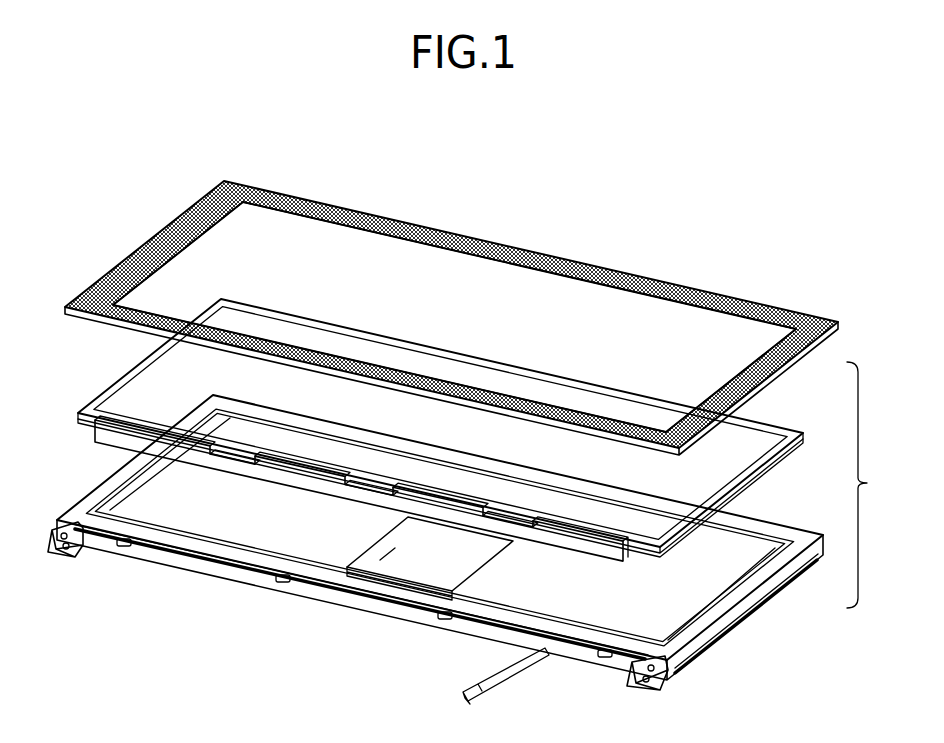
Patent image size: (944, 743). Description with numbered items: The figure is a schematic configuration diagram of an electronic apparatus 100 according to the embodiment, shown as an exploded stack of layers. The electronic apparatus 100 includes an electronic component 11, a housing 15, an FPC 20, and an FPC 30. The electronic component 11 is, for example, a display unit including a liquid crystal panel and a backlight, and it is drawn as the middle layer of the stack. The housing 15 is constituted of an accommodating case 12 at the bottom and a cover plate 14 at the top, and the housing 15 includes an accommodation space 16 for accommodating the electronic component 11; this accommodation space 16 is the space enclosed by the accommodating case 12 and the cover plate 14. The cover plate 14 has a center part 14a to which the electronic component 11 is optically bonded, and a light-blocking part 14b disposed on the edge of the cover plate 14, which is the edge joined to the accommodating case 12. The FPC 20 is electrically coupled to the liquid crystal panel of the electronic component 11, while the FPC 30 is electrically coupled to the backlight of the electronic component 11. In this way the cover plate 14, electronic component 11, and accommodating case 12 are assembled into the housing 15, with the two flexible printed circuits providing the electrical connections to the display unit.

The electronic apparatus 100 is at (626, 231).
The cover plate 14 is at (787, 377).
The center part 14a is at (383, 263).
The light-blocking part 14b is at (280, 192).
The electronic component 11 is at (110, 393).
The accommodating case 12 is at (780, 574).
The housing 15 is at (873, 485).
The accommodation space 16 is at (678, 624).
The FPC 20 is at (427, 550).
The FPC 30 is at (517, 680).